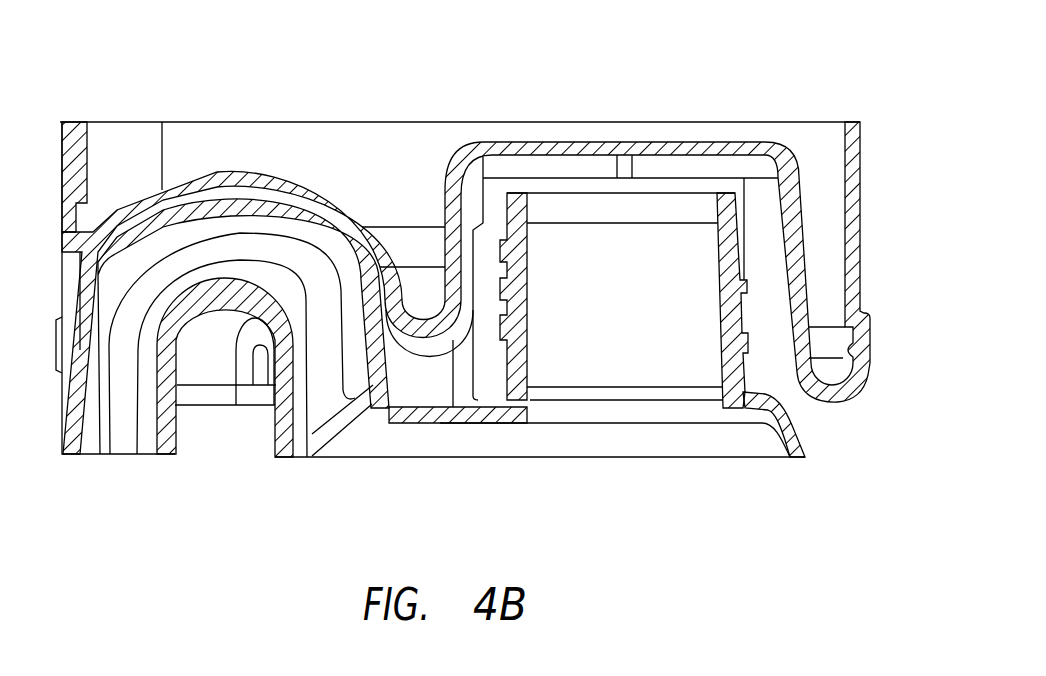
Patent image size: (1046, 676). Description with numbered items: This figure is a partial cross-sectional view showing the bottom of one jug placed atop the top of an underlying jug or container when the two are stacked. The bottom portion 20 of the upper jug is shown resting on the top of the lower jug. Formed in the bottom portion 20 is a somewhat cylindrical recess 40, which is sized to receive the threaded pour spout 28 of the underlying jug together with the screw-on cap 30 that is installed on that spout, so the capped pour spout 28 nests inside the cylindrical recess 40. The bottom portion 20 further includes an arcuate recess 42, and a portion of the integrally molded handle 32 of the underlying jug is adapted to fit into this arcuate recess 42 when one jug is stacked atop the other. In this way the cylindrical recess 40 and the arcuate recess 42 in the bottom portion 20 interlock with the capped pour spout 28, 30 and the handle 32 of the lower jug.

The bottom portion 20 is at (860, 292).
The threaded pour spout 28 is at (685, 265).
The screw-on cap 30 is at (657, 178).
The handle 32 is at (223, 253).
The cylindrical recess 40 is at (752, 142).
The arcuate recess 42 is at (278, 186).